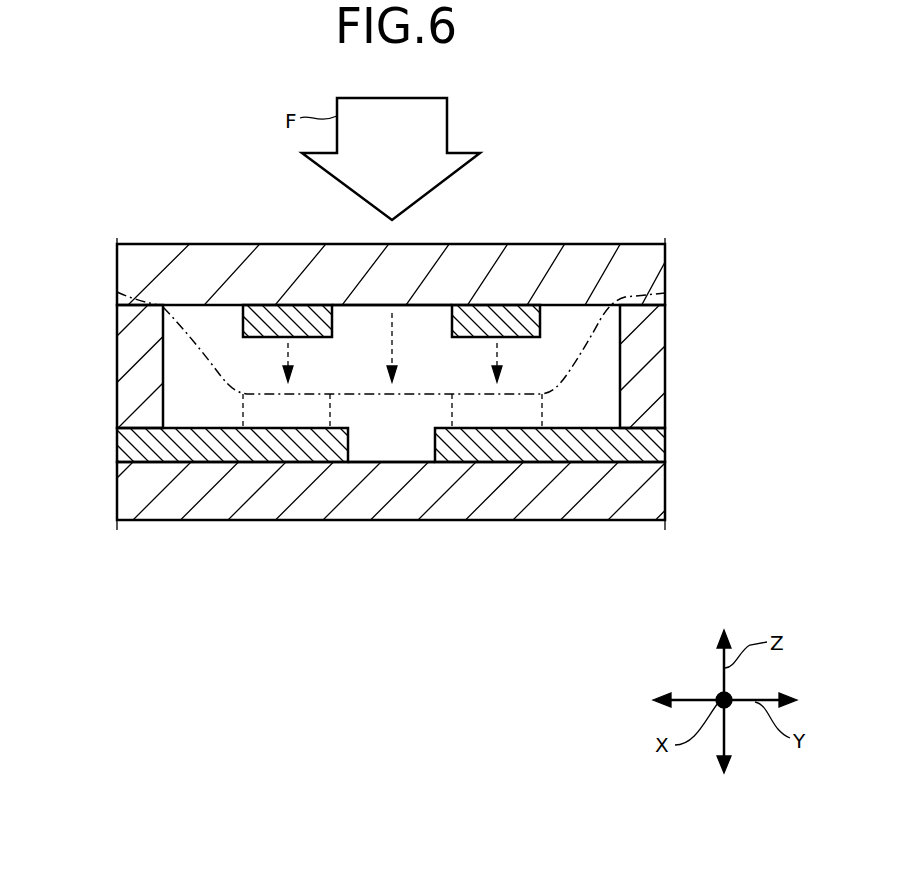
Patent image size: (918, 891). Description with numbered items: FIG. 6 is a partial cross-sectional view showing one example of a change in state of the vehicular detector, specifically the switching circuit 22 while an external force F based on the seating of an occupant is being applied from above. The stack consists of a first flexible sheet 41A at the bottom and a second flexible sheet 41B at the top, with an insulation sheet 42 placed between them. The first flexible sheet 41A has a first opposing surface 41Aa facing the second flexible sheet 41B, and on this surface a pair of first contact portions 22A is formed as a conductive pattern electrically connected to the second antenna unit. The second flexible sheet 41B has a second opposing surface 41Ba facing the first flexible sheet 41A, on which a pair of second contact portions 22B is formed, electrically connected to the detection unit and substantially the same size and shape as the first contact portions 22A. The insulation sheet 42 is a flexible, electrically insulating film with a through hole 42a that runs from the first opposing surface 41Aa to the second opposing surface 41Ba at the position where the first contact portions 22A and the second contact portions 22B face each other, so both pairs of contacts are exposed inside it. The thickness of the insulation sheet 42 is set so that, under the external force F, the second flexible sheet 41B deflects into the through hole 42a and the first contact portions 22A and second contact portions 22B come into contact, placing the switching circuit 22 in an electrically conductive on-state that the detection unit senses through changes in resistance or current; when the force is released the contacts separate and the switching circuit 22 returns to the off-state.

The switching circuit 22 is at (459, 445).
The first contact portions 22A is at (207, 444).
The second contact portions 22B is at (258, 340).
The first flexible sheet 41A is at (637, 522).
The first opposing surface 41Aa is at (409, 458).
The second flexible sheet 41B is at (637, 245).
The second opposing surface 41Ba is at (422, 306).
The insulation sheet 42 is at (133, 358).
The through hole 42a is at (620, 300).